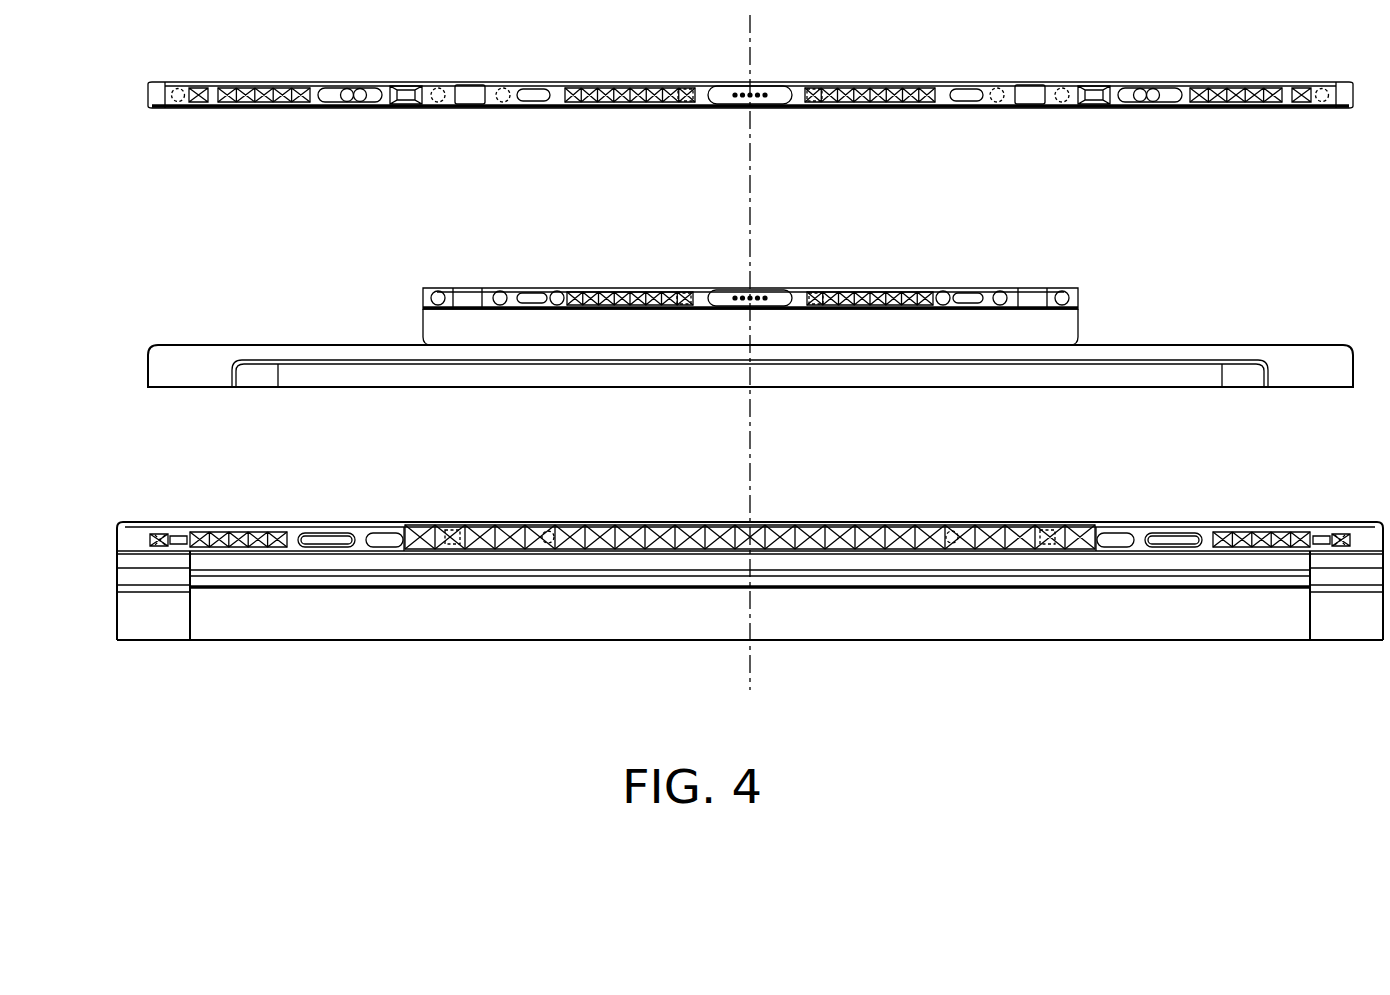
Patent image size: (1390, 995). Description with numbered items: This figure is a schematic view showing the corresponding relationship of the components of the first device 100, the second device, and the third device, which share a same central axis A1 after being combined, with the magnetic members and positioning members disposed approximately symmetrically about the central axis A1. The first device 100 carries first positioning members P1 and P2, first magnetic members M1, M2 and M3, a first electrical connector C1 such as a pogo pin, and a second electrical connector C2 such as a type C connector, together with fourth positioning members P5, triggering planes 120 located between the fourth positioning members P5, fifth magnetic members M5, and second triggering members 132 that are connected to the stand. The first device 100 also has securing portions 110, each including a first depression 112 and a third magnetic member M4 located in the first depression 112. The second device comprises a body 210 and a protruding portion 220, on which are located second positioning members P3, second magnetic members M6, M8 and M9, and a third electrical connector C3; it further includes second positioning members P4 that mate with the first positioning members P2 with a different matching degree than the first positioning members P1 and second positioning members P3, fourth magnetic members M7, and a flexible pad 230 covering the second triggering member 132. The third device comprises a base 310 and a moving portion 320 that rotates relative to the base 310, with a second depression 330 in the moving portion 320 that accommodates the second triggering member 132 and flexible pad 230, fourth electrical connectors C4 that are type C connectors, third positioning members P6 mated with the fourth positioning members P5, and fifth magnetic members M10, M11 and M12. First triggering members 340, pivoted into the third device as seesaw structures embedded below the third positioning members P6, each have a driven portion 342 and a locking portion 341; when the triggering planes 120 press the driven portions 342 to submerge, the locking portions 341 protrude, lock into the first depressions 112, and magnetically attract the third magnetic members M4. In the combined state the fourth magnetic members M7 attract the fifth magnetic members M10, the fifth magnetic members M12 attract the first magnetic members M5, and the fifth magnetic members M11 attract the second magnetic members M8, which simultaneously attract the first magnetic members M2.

The first device 100 is at (150, 95).
The securing portion 110 is at (750, 142).
The first depression 112 is at (320, 104).
The triggering plane 120 is at (214, 88).
The second triggering member 132 is at (470, 85).
The body 210 is at (170, 372).
The protruding portion 220 is at (1080, 330).
The flexible pad 230 is at (468, 300).
The base 310 is at (137, 620).
The moving portion 320 is at (128, 524).
The second depression 330 is at (452, 527).
The first triggering member 340 is at (750, 477).
The locking portion 341 is at (310, 536).
The driven portion 342 is at (180, 534).
The central axis A1 is at (753, 375).
The first electrical connector C1 is at (730, 86).
The second electrical connector C2 is at (405, 86).
The third electrical connector C3 is at (728, 290).
The fourth electrical connector C4 is at (383, 533).
The first positioning member P1 is at (533, 89).
The first positioning member P2 is at (605, 88).
The second positioning member P3 is at (532, 293).
The second positioning member P4 is at (578, 292).
The fourth positioning member P5 is at (256, 88).
The third positioning member P6 is at (240, 549).
The first magnetic member M1 is at (685, 103).
The first magnetic member M2 is at (503, 103).
The first magnetic member M3 is at (438, 103).
The third magnetic member M4 is at (749, 120).
The fifth magnetic member M5 is at (178, 103).
The second magnetic member M6 is at (684, 306).
The fourth magnetic member M7 is at (557, 306).
The second magnetic member M8 is at (500, 306).
The second magnetic member M9 is at (440, 306).
The fifth magnetic member M10 is at (548, 549).
The fifth magnetic member M11 is at (452, 549).
The fifth magnetic member M12 is at (158, 540).